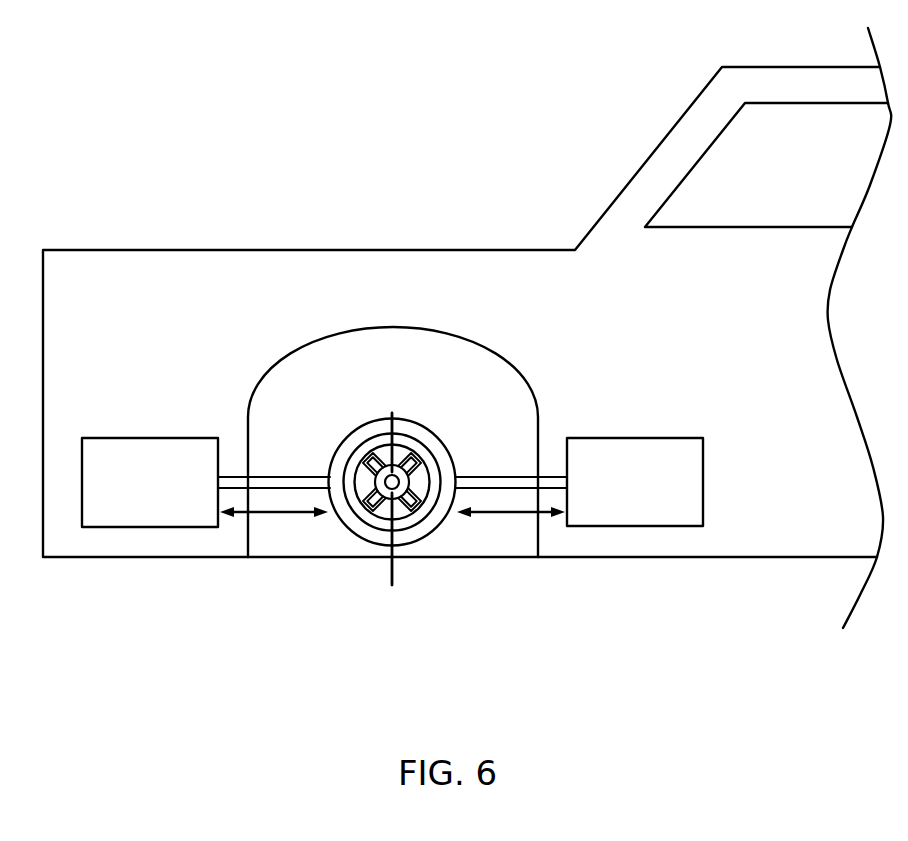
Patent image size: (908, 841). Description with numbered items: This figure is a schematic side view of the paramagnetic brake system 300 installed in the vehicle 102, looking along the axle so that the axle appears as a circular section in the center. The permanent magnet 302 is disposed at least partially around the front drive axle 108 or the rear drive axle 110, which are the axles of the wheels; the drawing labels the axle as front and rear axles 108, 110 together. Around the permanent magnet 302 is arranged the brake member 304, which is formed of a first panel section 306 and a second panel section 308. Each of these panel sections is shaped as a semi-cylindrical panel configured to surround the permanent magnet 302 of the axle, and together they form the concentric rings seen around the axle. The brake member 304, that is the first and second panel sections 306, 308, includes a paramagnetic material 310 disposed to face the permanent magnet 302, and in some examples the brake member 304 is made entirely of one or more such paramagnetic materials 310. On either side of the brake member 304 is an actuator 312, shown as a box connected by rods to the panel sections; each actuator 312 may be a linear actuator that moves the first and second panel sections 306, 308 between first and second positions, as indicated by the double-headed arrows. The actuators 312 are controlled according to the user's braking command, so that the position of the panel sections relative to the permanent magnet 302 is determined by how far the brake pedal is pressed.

The vehicle 102 is at (470, 250).
The paramagnetic brake system 300 is at (180, 318).
The permanent magnet 302 is at (392, 585).
The brake member 304 is at (360, 404).
The first panel section 306 is at (347, 437).
The second panel section 308 is at (433, 435).
The paramagnetic material 310 is at (364, 521).
The actuator 312 is at (122, 448).
The front drive axle 108 is at (392, 413).
The rear drive axle 110 is at (432, 427).